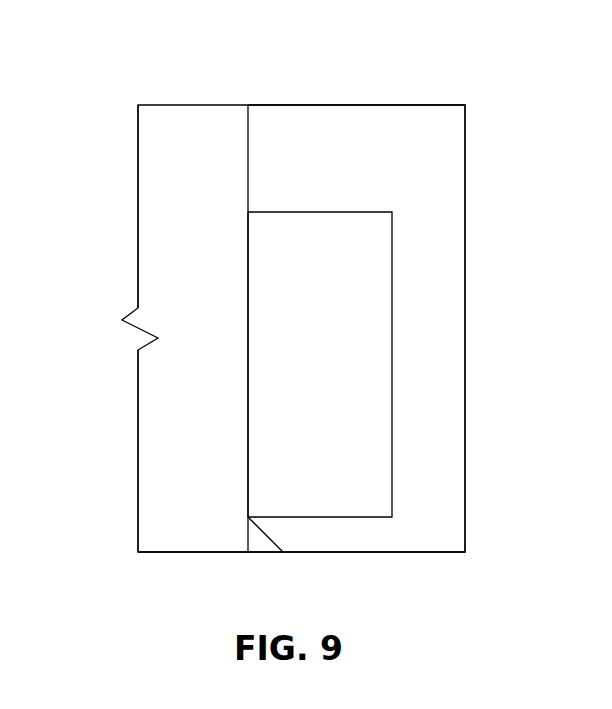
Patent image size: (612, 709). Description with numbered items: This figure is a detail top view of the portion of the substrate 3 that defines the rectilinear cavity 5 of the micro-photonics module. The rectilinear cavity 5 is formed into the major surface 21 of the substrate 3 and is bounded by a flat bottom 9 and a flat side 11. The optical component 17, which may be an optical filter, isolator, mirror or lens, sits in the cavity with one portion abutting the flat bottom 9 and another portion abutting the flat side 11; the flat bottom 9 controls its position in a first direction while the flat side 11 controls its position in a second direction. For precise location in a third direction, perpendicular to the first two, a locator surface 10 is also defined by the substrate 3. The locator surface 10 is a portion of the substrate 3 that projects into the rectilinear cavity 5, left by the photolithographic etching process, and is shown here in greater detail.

The substrate 3 is at (176, 150).
The rectilinear cavity 5 is at (431, 155).
The flat bottom 9 is at (393, 128).
The locator surface 10 is at (268, 533).
The flat side 11 is at (248, 365).
The optical component 17 is at (392, 365).
The major surface 21 is at (178, 522).